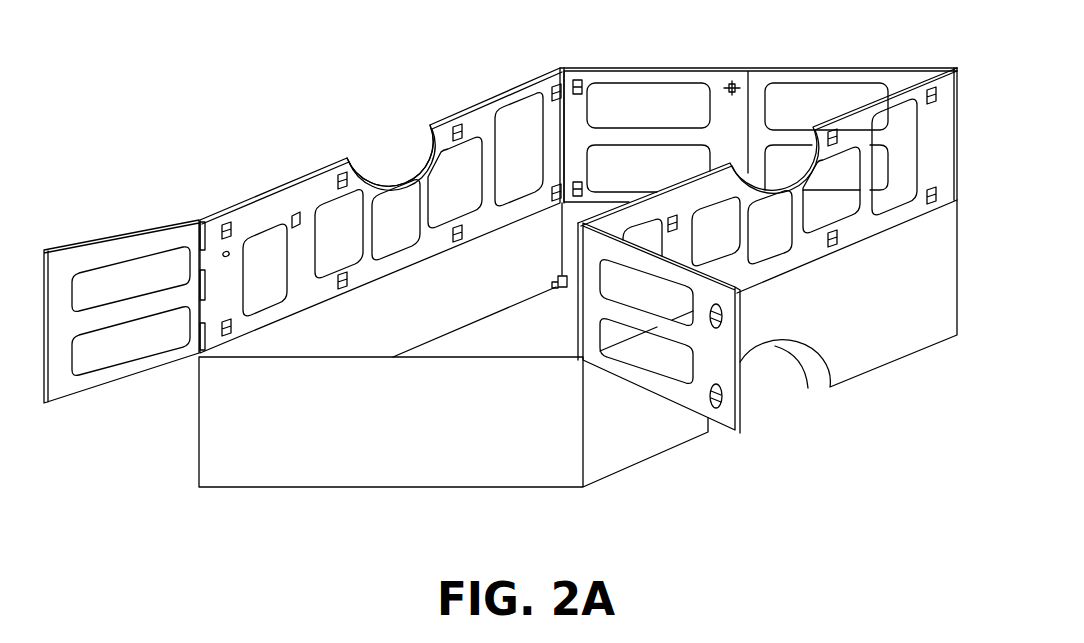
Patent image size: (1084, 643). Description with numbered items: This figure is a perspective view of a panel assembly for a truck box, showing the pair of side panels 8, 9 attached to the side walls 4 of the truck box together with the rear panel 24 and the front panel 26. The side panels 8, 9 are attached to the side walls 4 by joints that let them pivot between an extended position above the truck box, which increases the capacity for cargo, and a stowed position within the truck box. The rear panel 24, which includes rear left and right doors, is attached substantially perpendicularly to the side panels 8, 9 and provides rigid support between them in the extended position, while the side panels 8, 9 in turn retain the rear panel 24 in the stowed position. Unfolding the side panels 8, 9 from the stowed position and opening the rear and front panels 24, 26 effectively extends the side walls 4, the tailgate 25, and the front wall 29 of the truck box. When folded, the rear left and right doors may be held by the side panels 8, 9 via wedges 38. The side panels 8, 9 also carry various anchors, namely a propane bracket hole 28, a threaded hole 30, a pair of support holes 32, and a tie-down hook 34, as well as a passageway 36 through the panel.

The side walls 4 is at (865, 340).
The side panel 8 is at (468, 90).
The side panel 9 is at (870, 234).
The rear panel 24 is at (82, 243).
The tailgate 25 is at (377, 442).
The front panel 26 is at (746, 36).
The propane bracket hole 28 is at (300, 217).
The front wall 29 is at (570, 210).
The threaded hole 30 is at (222, 255).
The support holes 32 is at (423, 140).
The tie-down hook 34 is at (227, 225).
The passageway 36 is at (267, 245).
The wedges 38 is at (563, 290).